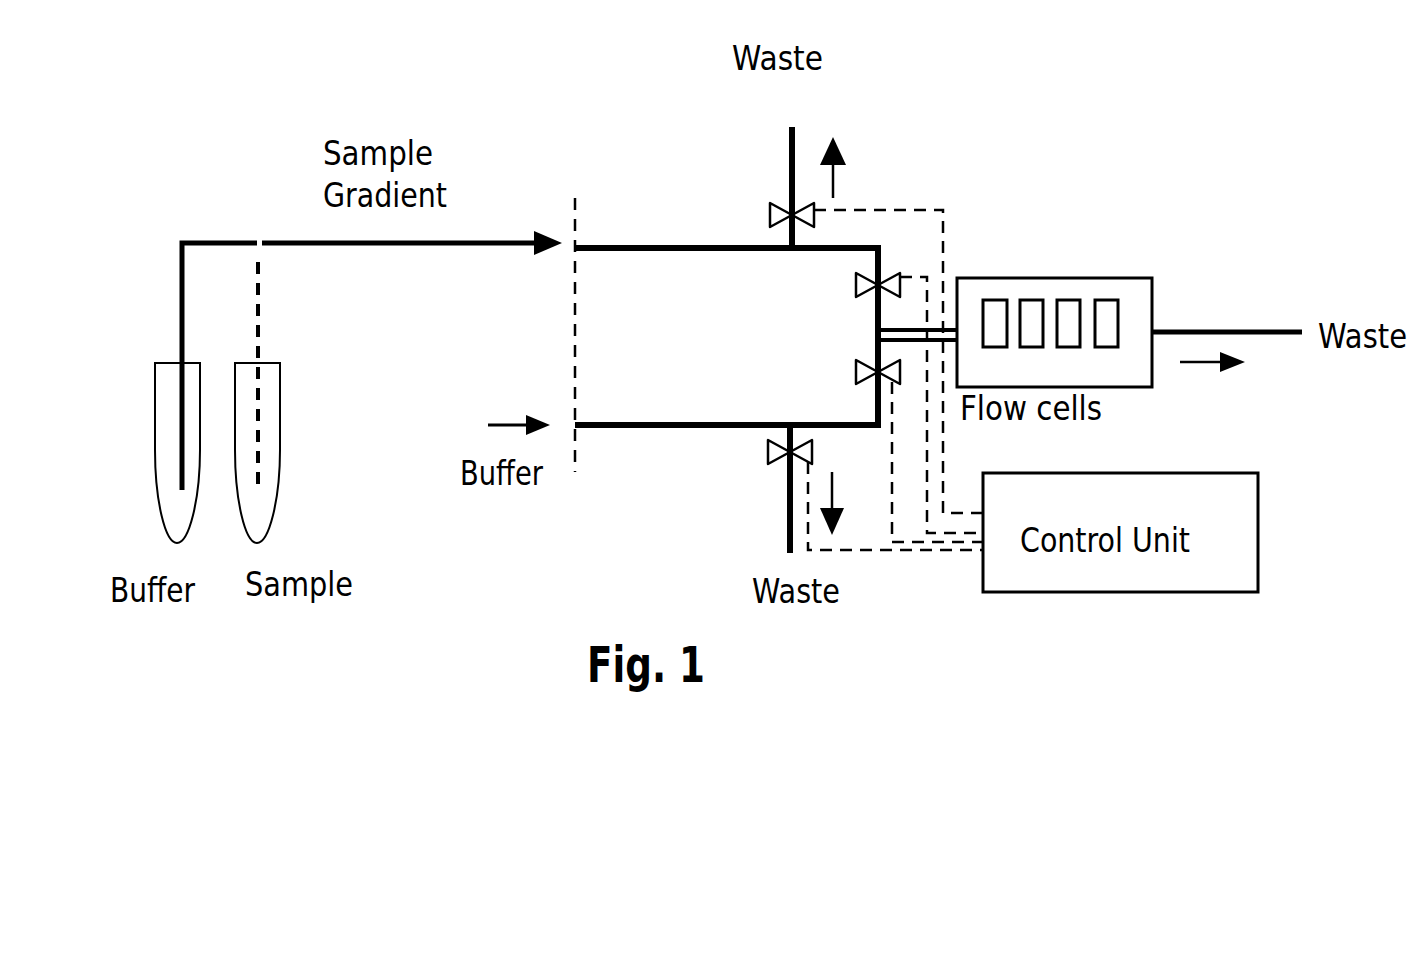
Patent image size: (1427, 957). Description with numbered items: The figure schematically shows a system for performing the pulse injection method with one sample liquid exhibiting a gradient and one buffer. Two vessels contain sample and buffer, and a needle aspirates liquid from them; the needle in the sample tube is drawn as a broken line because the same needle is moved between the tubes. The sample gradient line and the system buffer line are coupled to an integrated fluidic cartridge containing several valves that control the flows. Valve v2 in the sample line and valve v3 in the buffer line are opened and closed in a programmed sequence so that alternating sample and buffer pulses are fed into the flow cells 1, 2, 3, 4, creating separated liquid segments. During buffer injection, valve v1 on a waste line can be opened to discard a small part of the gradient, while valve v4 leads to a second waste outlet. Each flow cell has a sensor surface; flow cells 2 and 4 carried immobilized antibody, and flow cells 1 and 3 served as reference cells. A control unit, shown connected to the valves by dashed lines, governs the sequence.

The valve v1 is at (847, 356).
The valve v2 is at (888, 403).
The valve v3 is at (888, 448).
The valve v4 is at (875, 490).
The flow cell 1 is at (995, 341).
The flow cell 2 is at (1031, 341).
The flow cell 3 is at (1068, 341).
The flow cell 4 is at (1106, 341).